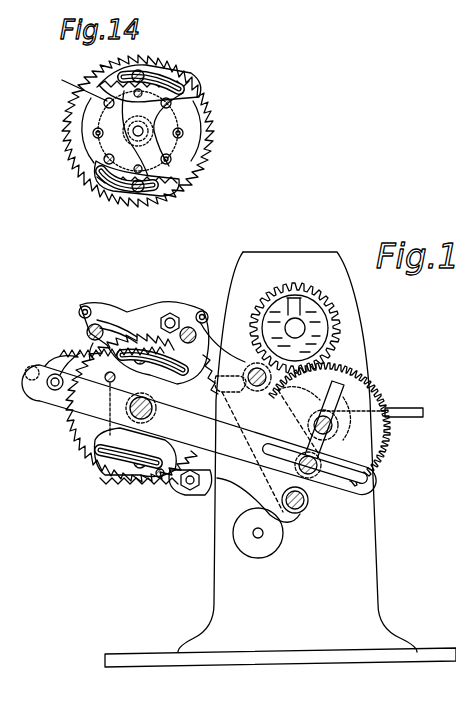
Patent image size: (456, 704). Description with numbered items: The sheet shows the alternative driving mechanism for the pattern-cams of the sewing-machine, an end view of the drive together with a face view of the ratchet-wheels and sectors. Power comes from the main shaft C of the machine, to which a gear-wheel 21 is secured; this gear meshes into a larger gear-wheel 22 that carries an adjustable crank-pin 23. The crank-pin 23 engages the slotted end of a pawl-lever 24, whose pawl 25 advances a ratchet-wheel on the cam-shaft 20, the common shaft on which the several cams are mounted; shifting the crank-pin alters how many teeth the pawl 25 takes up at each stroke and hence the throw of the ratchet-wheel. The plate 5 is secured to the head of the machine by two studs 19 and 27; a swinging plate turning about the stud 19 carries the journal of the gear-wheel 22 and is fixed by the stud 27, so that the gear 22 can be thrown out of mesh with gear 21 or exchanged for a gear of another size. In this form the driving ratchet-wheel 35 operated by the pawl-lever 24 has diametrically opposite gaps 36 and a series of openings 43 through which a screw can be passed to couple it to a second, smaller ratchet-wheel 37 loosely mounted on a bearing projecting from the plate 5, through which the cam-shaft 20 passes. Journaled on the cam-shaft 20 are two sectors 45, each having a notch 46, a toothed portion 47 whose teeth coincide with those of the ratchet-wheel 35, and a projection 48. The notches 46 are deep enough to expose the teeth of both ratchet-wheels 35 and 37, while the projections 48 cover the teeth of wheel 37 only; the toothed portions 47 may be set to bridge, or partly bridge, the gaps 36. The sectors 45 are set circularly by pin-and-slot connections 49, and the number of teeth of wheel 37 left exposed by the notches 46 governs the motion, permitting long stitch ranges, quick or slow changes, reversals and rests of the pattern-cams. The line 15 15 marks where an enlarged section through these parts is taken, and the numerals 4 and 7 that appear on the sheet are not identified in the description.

In FIG. 14, the frame plate 4 is at (83, 83).
In FIG. 13, the plate 5 is at (212, 492).
In FIG. 14, the pawl segment 7 is at (85, 181).
In FIG. 14, the section line 15 is at (138, 262).
In FIG. 13, the stud 19 is at (297, 513).
In FIG. 13, the cam-shaft 20 is at (127, 408).
In FIG. 13, the gear-wheel 21 is at (336, 350).
In FIG. 13, the gear-wheel 22 is at (373, 388).
In FIG. 13, the crank-pin 23 is at (314, 476).
In FIG. 13, the pawl-lever 24 is at (199, 438).
In FIG. 13, the pawl 25 is at (65, 365).
In FIG. 13, the stud 27 is at (256, 372).
In FIG. 14, the driving ratchet-wheel 35 is at (194, 172).
In FIG. 13, the driving ratchet-wheel 35 is at (70, 428).
In FIG. 14, the gaps 36 is at (127, 71).
In FIG. 13, the gaps 36 is at (143, 333).
In FIG. 14, the second smaller ratchet-wheel 37 is at (149, 71).
In FIG. 13, the second smaller ratchet-wheel 37 is at (133, 478).
In FIG. 14, the openings 43 is at (182, 131).
In FIG. 13, the openings 43 is at (180, 448).
In FIG. 14, the sectors 45 is at (140, 131).
In FIG. 13, the sectors 45 is at (141, 409).
In FIG. 14, the notch 46 is at (109, 191).
In FIG. 13, the notch 46 is at (118, 470).
In FIG. 13, the toothed portion 47 is at (188, 378).
In FIG. 14, the projection 48 is at (161, 191).
In FIG. 13, the projection 48 is at (109, 372).
In FIG. 13, the pin-and-slot connections 49 is at (140, 340).
In FIG. 13, the main shaft C is at (298, 328).